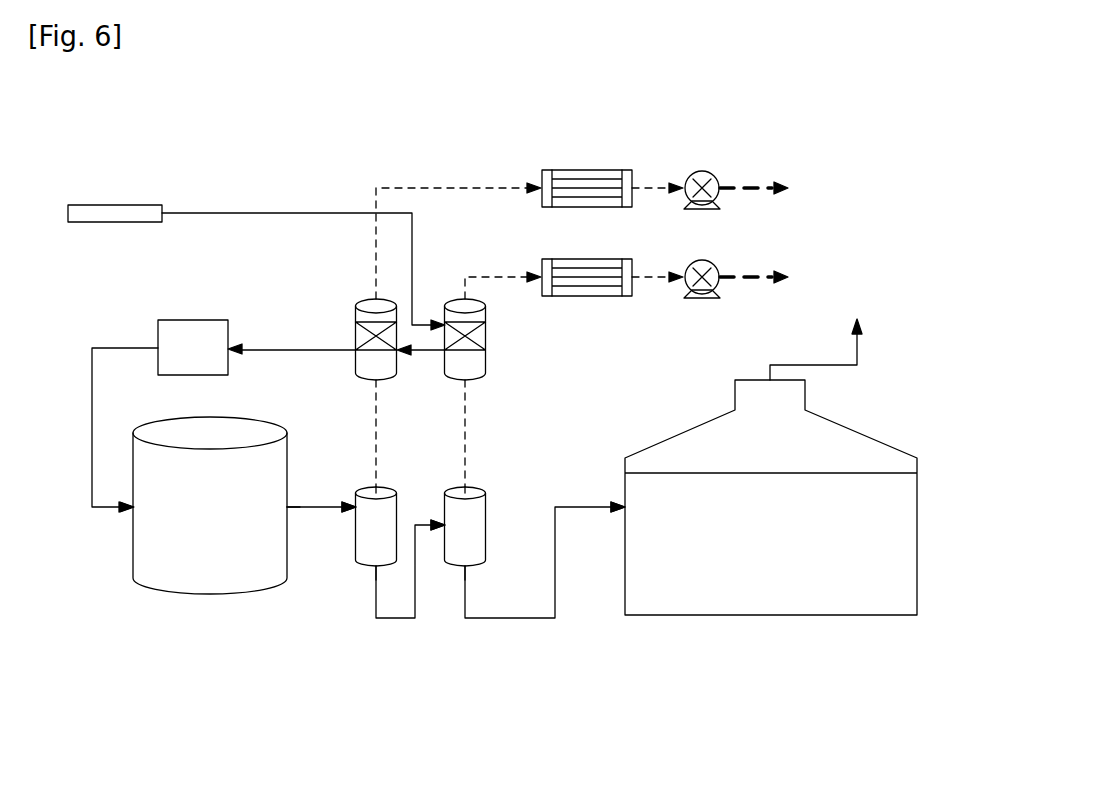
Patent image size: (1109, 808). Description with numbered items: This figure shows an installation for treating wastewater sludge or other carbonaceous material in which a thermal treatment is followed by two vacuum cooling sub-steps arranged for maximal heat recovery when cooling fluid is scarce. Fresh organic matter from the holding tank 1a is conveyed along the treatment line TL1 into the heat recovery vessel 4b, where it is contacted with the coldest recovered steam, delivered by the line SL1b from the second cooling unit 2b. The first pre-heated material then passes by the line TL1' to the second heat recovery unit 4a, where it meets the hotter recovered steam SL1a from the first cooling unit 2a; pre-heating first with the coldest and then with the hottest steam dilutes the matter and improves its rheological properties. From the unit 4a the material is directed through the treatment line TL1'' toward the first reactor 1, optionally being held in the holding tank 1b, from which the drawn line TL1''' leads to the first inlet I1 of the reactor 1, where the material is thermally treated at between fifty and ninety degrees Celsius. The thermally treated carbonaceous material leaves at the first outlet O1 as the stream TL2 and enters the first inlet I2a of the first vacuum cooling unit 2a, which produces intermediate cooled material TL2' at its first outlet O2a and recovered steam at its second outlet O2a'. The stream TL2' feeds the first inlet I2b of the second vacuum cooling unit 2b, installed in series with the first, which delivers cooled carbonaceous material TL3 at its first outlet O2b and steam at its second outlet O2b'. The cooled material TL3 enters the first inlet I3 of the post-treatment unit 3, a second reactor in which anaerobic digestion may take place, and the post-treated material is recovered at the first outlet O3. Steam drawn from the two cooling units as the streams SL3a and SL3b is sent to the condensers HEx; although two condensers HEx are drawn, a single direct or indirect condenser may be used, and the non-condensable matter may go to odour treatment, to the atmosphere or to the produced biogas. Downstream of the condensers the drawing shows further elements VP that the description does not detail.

The holding tank 1a is at (122, 213).
The treatment line TL1 is at (303, 225).
The recovered steam line SL3a is at (409, 188).
The recovered steam line SL3b is at (480, 277).
The condenser HEx is at (578, 258).
The vacuum pump VP is at (705, 261).
The second heat recovery unit 4a is at (358, 300).
The heat recovery vessel 4b is at (487, 338).
The pre-heated organic matter line TL1' is at (421, 390).
The treatment line TL1'' is at (292, 304).
The holding tank 1b is at (178, 338).
The transfer line 1''' TL1''' is at (107, 383).
The recovered steam line SL1a is at (374, 412).
The recovered steam line SL1b is at (467, 422).
The first reactor 1 is at (213, 565).
The first inlet of the thermal treatment unit I1 is at (133, 510).
The first outlet of the thermal treatment unit O1 is at (280, 512).
The thermally treated carbonaceous material TL2 is at (321, 553).
The first inlet of the first vacuum cooling unit I2a is at (354, 500).
The first vacuum cooling unit 2a is at (368, 546).
The second outlet of the first vacuum cooling unit O2a' is at (417, 468).
The second outlet of the second vacuum cooling unit O2b' is at (508, 468).
The second vacuum cooling unit 2b is at (470, 531).
The intermediate cooled carbonaceous material TL2' is at (395, 611).
The first outlet of the first vacuum cooling unit O2a is at (405, 627).
The first inlet of the second vacuum cooling unit I2b is at (444, 531).
The cooled carbonaceous material TL3 is at (535, 620).
The first outlet of the second vacuum cooling unit O2b is at (495, 627).
The first inlet of the post-treatment unit I3 is at (624, 506).
The post-treatment unit 3 is at (770, 590).
The first outlet of the post-treatment unit O3 is at (770, 380).